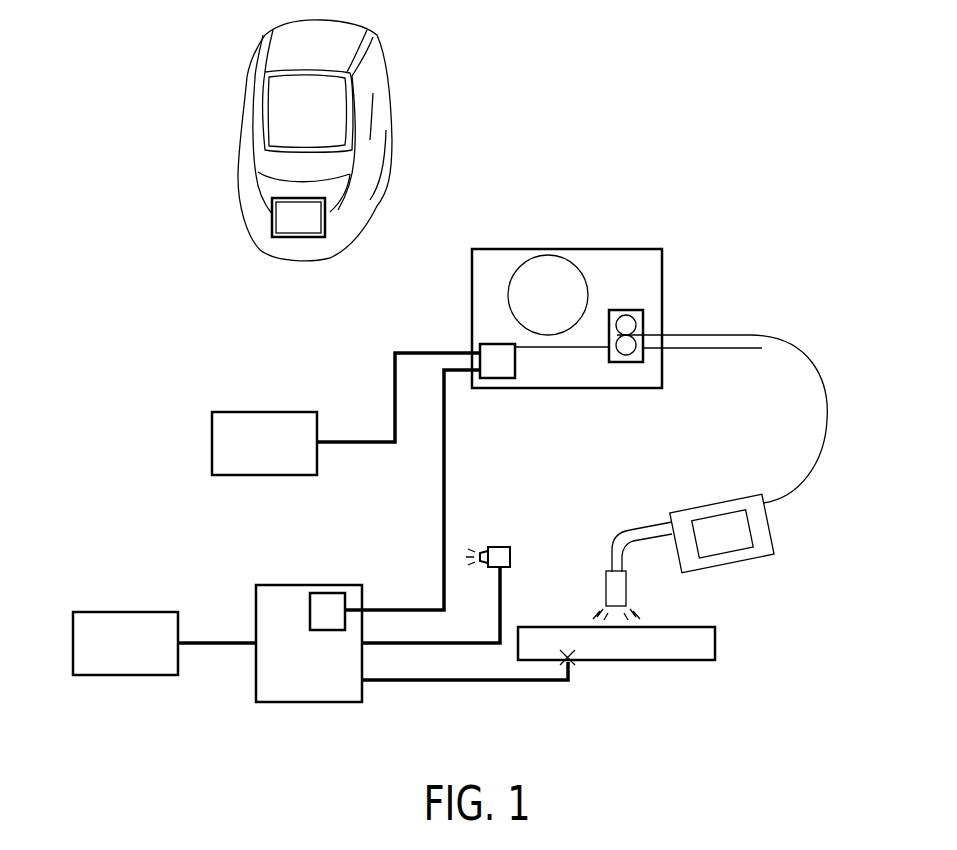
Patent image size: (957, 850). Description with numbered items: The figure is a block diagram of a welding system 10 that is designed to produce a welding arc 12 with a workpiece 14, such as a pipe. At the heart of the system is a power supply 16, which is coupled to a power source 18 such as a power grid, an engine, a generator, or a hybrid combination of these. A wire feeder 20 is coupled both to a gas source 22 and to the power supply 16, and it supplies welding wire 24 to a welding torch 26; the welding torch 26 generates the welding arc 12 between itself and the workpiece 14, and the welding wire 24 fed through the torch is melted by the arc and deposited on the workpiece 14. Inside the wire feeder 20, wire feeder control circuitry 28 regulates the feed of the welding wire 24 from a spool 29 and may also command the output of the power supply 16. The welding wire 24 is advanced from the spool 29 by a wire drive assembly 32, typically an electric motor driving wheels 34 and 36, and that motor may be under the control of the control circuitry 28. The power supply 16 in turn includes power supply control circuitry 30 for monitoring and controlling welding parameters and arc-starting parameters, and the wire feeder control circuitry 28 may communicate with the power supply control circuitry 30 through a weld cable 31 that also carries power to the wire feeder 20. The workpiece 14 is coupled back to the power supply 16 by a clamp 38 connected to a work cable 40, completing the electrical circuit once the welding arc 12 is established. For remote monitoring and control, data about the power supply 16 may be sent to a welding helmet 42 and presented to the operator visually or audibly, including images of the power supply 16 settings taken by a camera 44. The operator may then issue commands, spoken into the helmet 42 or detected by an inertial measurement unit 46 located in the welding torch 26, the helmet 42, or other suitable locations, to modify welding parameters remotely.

The welding system 10 is at (767, 258).
The welding arc 12 is at (607, 608).
The workpiece 14 is at (717, 645).
The power supply 16 is at (310, 585).
The power source 18 is at (127, 612).
The wire feeder 20 is at (567, 249).
The gas source 22 is at (263, 412).
The welding wire 24 is at (653, 332).
The welding torch 26 is at (715, 503).
The wire feeder control circuitry 28 is at (515, 362).
The spool 29 is at (521, 267).
The power supply control circuitry 30 is at (330, 593).
The weld cable 31 is at (447, 490).
The wire drive assembly 32 is at (633, 363).
The wheel 34 is at (627, 310).
The wheel 36 is at (623, 360).
The clamp 38 is at (572, 665).
The work cable 40 is at (467, 682).
The welding helmet 42 is at (377, 200).
The camera 44 is at (512, 555).
The inertial measurement unit (IMU) 46 is at (270, 217).